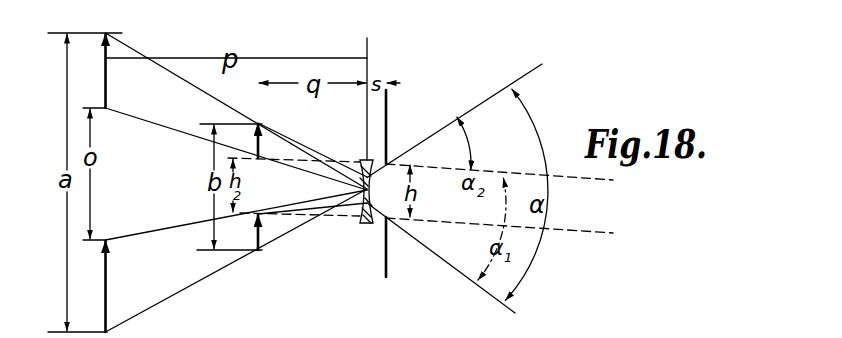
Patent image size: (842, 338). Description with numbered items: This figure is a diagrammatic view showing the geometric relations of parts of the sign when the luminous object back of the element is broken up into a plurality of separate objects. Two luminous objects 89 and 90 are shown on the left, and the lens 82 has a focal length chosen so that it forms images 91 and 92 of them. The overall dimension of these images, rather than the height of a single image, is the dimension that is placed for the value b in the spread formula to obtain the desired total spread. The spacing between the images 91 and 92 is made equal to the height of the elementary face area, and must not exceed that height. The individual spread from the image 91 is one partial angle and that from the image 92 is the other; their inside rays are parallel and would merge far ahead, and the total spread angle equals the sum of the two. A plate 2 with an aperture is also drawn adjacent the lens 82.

The luminous object 89 is at (107, 94).
The luminous object 90 is at (107, 286).
The image 91 is at (260, 142).
The image 92 is at (259, 234).
The lens 82 is at (366, 158).
The aperture plate / diaphragm 2 is at (389, 120).